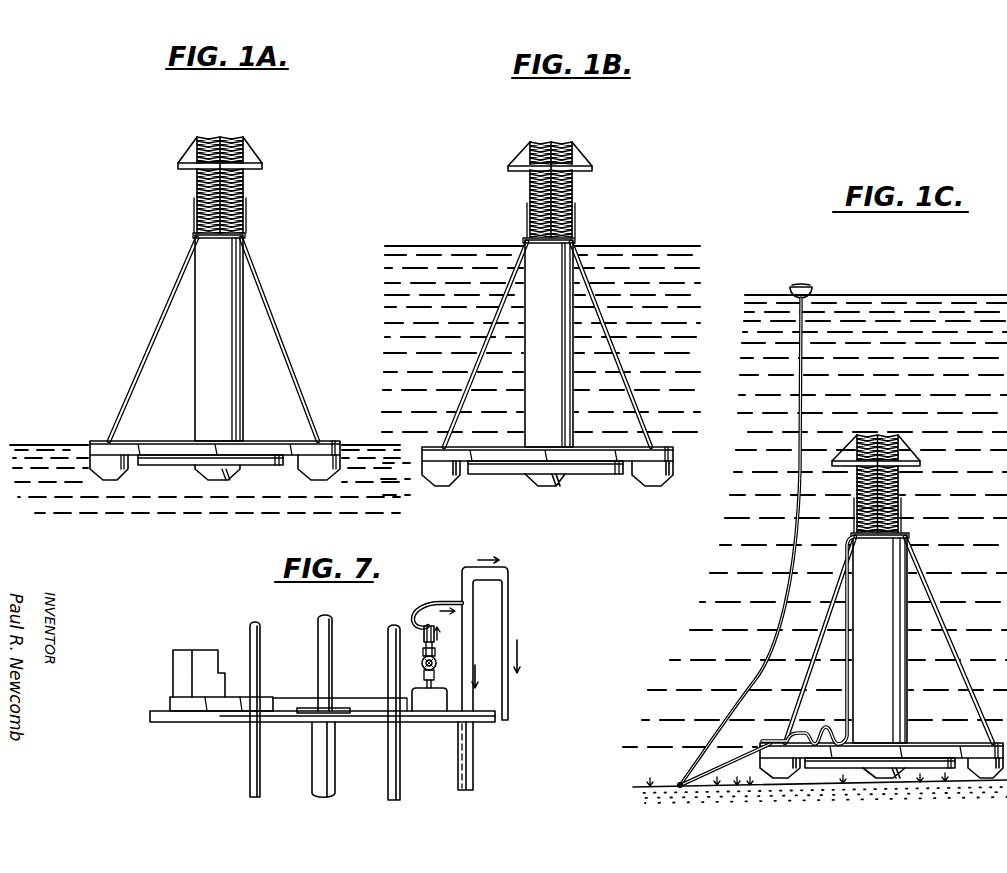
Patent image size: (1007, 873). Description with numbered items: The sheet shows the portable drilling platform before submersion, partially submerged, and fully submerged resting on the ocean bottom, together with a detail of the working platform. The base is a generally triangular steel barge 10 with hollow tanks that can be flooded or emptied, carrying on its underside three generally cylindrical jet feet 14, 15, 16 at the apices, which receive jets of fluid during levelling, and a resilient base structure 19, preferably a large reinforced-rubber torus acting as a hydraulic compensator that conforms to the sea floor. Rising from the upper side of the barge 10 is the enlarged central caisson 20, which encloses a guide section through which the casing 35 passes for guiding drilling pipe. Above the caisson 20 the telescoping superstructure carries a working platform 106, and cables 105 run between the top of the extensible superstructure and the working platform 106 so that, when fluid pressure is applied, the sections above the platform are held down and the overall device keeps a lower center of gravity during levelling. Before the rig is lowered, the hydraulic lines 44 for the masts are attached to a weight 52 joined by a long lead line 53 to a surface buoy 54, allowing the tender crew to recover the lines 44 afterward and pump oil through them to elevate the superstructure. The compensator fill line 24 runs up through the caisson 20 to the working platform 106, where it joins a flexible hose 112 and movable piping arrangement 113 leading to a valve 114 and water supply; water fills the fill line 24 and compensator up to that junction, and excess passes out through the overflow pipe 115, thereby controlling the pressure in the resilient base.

In FIG. 1A, the steel barge 10 is at (176, 441).
In FIG. 1B, the steel barge 10 is at (620, 455).
In FIG. 1C, the steel barge 10 is at (938, 750).
In FIG. 1A, the jet foot structure 14 is at (100, 462).
In FIG. 1A, the jet foot structure 15 is at (338, 461).
In FIG. 1A, the jet foot structure 16 is at (210, 465).
In FIG. 1A, the resilient base structure 19 is at (258, 462).
In FIG. 1A, the central caisson 20 is at (203, 369).
In FIG. 1B, the central caisson 20 is at (548, 406).
In FIG. 1C, the central caisson 20 is at (883, 675).
In FIG. 1A, the cable 105 is at (191, 152).
In FIG. 1B, the cable 105 is at (524, 157).
In FIG. 1A, the working platform 106 is at (246, 170).
In FIG. 7, the working platform 106 is at (223, 720).
In FIG. 1C, the buoy 54 is at (803, 289).
In FIG. 1C, the lead line 53 is at (770, 616).
In FIG. 1C, the weight 52 is at (680, 782).
In FIG. 1C, the hydraulic line 44 is at (843, 725).
In FIG. 7, the compensator fill line 24 is at (463, 659).
In FIG. 7, the casing 35 is at (322, 760).
In FIG. 7, the flexible hose 112 is at (441, 586).
In FIG. 7, the movable piping arrangement 113 is at (413, 630).
In FIG. 7, the valve 114 is at (436, 664).
In FIG. 7, the overflow pipe 115 is at (503, 621).